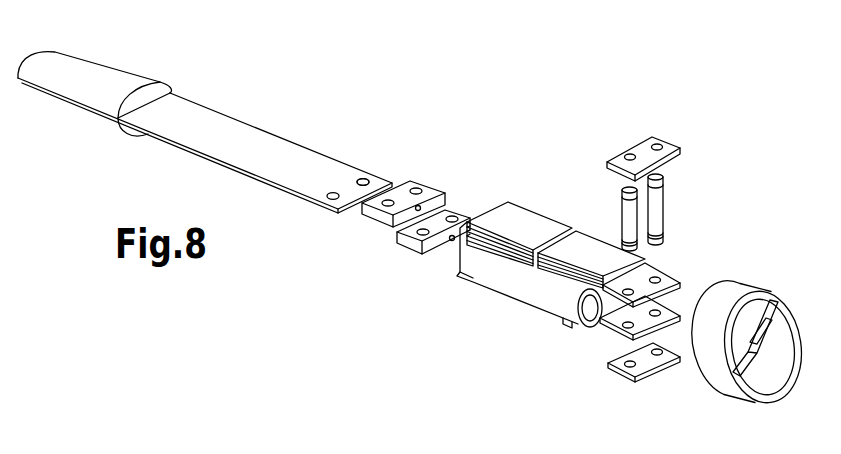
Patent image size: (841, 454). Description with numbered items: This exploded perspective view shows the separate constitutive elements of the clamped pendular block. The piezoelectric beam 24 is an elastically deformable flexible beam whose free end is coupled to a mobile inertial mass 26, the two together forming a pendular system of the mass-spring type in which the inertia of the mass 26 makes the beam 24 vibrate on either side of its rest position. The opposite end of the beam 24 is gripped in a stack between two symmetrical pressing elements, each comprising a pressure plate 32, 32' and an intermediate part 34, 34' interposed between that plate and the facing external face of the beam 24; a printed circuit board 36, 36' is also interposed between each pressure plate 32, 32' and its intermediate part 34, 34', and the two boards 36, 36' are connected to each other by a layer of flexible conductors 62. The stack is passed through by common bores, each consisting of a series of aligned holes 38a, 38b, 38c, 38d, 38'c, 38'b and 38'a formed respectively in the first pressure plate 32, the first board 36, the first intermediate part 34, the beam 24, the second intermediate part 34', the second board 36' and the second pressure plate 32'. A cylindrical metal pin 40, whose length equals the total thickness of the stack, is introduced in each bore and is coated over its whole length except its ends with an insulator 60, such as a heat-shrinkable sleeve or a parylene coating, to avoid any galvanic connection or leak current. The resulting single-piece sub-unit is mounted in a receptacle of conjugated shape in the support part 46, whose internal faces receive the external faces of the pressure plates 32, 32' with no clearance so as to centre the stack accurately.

The piezoelectric beam 24 is at (200, 130).
The mobile inertial mass 26 is at (110, 80).
The first pressure plate 32 is at (636, 137).
The second pressure plate 32' is at (631, 387).
The first intermediate part 34 is at (403, 166).
The second intermediate part 34' is at (402, 248).
The first printed circuit board 36 is at (556, 239).
The second printed circuit board 36' is at (570, 332).
The hole 38a is at (658, 146).
The hole 38'a is at (672, 396).
The hole 38b is at (668, 284).
The hole 38'b is at (666, 295).
The hole 38c is at (418, 186).
The hole 38'c is at (483, 183).
The hole 38d is at (363, 180).
The pin 40 is at (658, 185).
The support part 46 is at (805, 305).
The insulator 60 is at (660, 213).
The layer of flexible conductors 62 is at (520, 287).